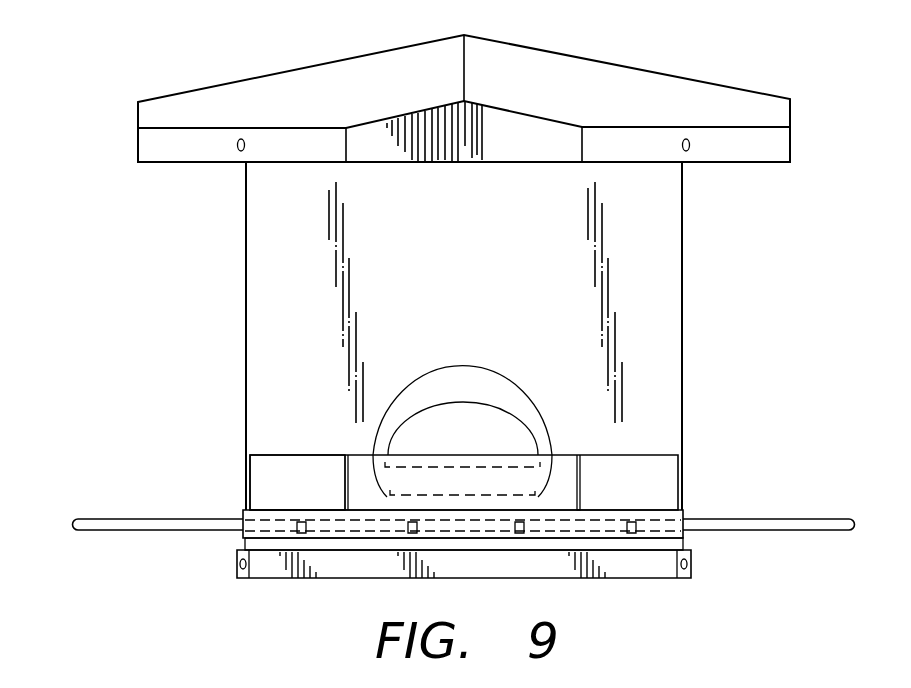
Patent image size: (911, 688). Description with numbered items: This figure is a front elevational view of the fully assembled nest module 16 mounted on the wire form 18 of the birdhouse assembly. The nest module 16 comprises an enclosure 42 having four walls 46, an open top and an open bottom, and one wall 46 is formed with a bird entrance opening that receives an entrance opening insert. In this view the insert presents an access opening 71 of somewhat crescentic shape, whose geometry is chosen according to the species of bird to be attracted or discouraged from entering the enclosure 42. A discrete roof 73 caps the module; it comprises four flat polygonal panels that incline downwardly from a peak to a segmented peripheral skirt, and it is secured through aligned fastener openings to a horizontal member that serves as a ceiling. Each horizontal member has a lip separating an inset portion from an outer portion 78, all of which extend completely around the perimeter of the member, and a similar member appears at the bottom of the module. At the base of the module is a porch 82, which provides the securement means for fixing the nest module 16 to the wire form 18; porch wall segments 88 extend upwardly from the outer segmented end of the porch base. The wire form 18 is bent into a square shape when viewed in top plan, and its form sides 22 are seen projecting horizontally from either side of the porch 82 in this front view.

The nest module 16 is at (200, 233).
The wire form 18 is at (100, 520).
The form side 22 is at (770, 522).
The enclosure 42 is at (245, 286).
The wall 46 is at (277, 316).
The access opening 71 is at (463, 404).
The roof 73 is at (712, 95).
The outer portion 78 is at (647, 568).
The porch 82 is at (293, 455).
The porch wall segment 88 is at (278, 471).